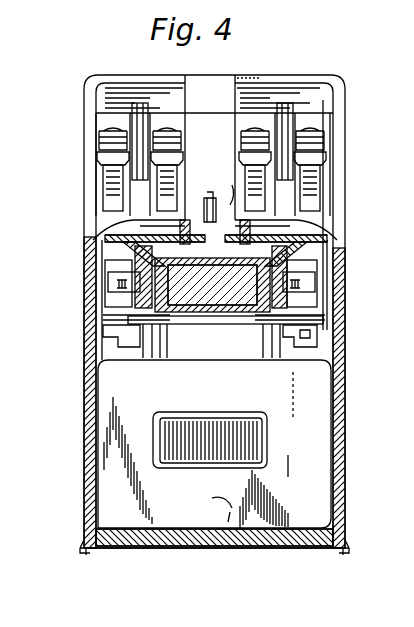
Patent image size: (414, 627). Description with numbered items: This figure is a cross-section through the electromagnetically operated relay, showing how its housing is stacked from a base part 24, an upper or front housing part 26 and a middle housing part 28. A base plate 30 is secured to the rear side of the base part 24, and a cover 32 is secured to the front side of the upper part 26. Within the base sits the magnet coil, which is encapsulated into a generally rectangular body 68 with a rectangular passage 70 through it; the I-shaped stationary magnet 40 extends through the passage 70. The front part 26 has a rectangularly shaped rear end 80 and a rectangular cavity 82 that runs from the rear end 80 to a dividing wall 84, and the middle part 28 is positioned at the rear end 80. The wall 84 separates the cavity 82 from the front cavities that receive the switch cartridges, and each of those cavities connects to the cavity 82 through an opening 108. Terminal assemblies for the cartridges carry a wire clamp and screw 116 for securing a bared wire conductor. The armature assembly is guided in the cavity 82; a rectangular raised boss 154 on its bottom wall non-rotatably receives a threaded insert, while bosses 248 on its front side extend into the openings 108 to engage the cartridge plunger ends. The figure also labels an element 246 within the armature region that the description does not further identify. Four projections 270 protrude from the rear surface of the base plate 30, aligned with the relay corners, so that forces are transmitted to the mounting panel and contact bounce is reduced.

The base part 24 is at (85, 456).
The upper or front housing part 26 is at (338, 273).
The middle housing part 28 is at (338, 410).
The base plate 30 is at (226, 548).
The cover 32 is at (341, 82).
The stationary magnet 40 is at (240, 440).
The body 68 is at (216, 504).
The passage 70 is at (234, 410).
The rear end 80 is at (336, 392).
The cavity 82 is at (335, 307).
The dividing wall 84 is at (335, 250).
The opening 108 is at (102, 246).
The wire clamp and screw 116 is at (98, 148).
The raised boss 154 is at (215, 203).
The core 246 is at (212, 285).
The boss 248 is at (135, 258).
The projections 270 is at (89, 549).